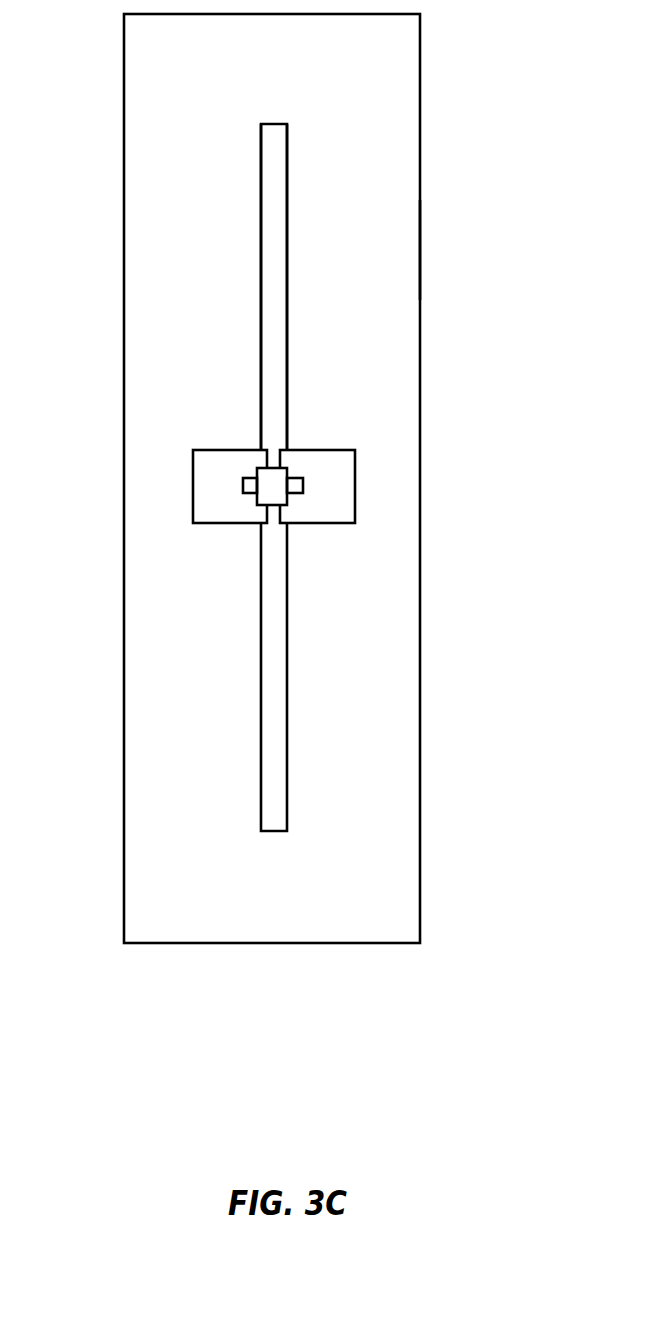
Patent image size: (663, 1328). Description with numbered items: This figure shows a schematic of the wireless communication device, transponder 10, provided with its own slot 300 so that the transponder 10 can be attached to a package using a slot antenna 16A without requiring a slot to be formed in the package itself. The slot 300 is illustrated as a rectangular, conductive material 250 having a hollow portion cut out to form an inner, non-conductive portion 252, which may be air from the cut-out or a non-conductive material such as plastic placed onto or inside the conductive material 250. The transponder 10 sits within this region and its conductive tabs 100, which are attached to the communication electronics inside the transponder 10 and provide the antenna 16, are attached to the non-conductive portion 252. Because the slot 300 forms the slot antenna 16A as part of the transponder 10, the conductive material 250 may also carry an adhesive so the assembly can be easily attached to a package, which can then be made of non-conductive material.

The conductive material 250 is at (342, 830).
The non-conductive portion 252 is at (273, 155).
The slot 300 is at (285, 210).
The slot antenna 16A is at (289, 396).
The antenna 16 is at (424, 254).
The tabs 100 is at (205, 503).
The transponder 10 is at (272, 480).